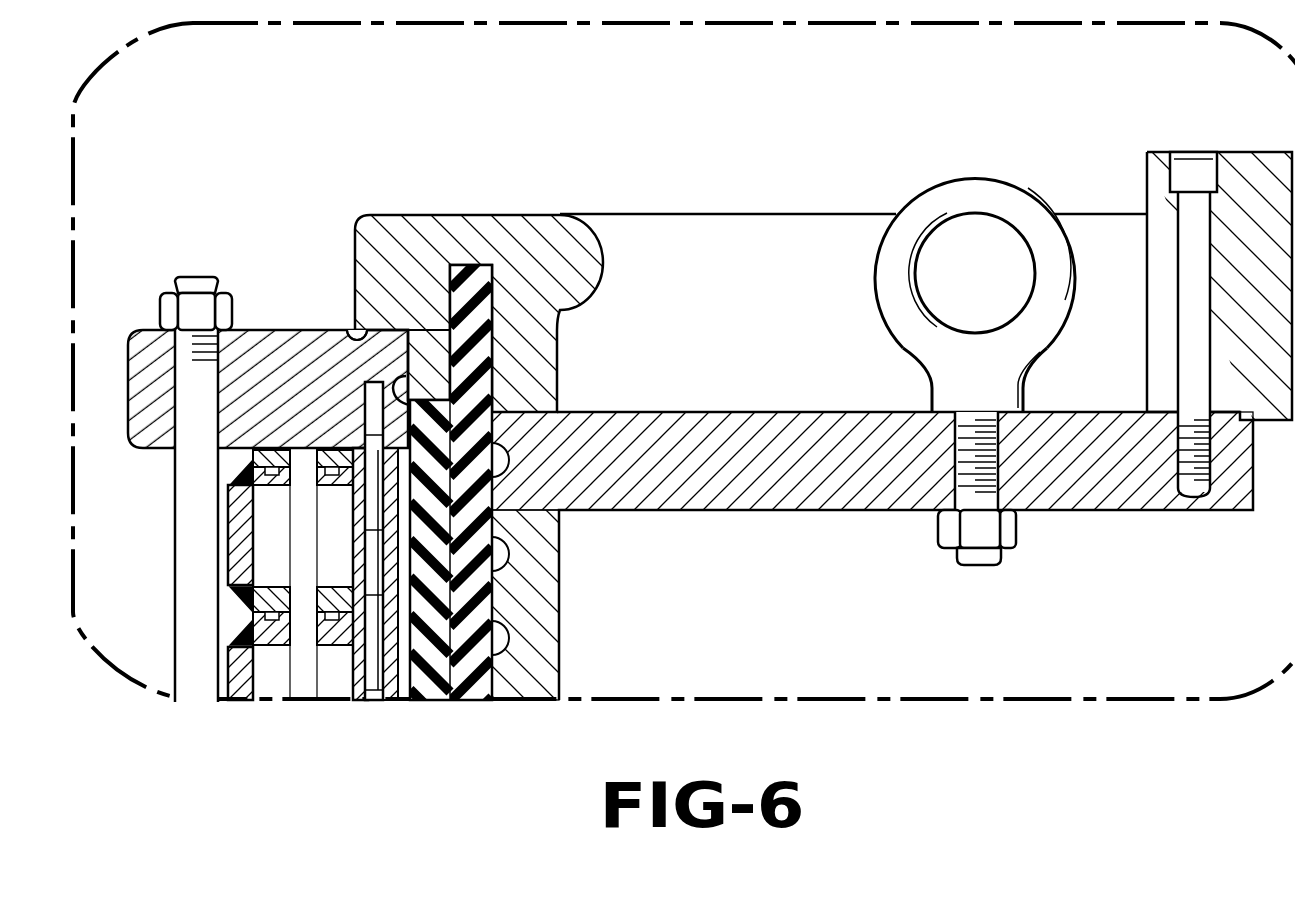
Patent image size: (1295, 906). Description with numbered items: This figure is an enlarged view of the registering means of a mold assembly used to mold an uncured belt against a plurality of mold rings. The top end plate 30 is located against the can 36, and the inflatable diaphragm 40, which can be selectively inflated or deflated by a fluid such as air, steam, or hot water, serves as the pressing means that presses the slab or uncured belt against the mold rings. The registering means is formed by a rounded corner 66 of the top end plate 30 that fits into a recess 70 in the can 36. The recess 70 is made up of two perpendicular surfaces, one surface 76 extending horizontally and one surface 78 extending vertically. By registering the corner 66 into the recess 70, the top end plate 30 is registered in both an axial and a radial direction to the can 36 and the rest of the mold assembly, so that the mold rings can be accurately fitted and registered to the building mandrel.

The top end plate 30 is at (273, 365).
The can 36 is at (373, 233).
The inflatable diaphragm 40 is at (483, 307).
The rounded corner 66 is at (390, 348).
The recess 70 is at (406, 335).
The horizontal surface 76 is at (324, 328).
The vertical surface 78 is at (410, 405).